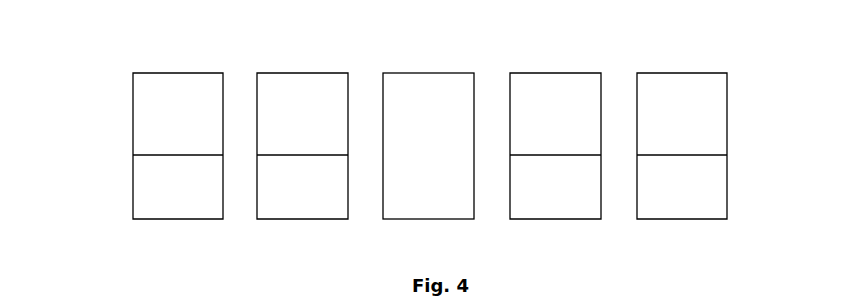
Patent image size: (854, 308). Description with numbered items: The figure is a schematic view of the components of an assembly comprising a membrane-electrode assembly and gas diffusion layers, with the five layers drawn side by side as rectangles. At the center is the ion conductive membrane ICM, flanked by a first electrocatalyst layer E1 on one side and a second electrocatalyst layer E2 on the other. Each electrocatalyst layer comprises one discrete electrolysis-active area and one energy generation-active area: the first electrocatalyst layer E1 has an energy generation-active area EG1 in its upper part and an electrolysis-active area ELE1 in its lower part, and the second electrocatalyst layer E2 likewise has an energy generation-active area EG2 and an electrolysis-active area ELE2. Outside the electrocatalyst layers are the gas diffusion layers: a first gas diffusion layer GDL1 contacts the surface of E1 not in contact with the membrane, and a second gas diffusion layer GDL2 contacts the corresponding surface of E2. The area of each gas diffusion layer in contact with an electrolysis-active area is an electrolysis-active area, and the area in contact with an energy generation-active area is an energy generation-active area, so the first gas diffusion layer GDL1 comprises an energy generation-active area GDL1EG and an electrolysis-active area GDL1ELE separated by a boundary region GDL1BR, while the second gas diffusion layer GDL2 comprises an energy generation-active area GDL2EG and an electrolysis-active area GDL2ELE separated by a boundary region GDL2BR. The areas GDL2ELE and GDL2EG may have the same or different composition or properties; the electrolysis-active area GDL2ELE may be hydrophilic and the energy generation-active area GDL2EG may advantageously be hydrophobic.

The first gas diffusion layer GDL1 is at (138, 121).
The energy generation-active area of GDL1 GDL1EG is at (133, 110).
The boundary region of GDL1 GDL1BR is at (132, 155).
The electrolysis-active area of GDL1 GDL1ELE is at (130, 207).
The first electrocatalyst layer E1 is at (301, 137).
The energy generation-active area of E1 EG1 is at (312, 72).
The electrolysis-active area of E1 ELE1 is at (302, 220).
The ion conductive membrane ICM is at (433, 60).
The second electrocatalyst layer E2 is at (567, 144).
The energy generation-active area of E2 EG2 is at (566, 72).
The electrolysis-active area of E2 ELE2 is at (555, 220).
The second gas diffusion layer GDL2 is at (729, 120).
The energy generation-active area of GDL2 GDL2EG is at (732, 120).
The boundary region of GDL2 GDL2BR is at (732, 156).
The electrolysis-active area of GDL2 GDL2ELE is at (727, 207).